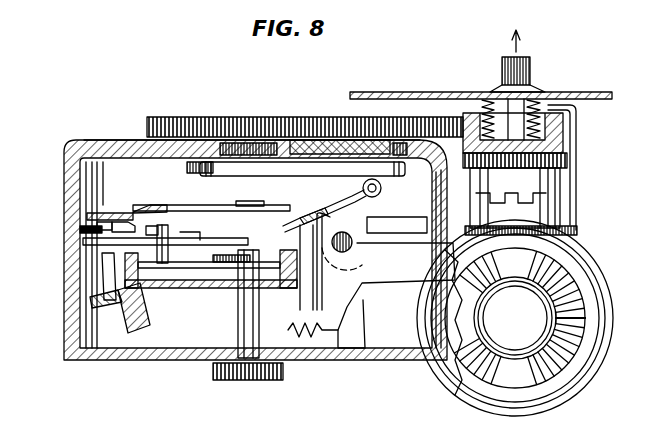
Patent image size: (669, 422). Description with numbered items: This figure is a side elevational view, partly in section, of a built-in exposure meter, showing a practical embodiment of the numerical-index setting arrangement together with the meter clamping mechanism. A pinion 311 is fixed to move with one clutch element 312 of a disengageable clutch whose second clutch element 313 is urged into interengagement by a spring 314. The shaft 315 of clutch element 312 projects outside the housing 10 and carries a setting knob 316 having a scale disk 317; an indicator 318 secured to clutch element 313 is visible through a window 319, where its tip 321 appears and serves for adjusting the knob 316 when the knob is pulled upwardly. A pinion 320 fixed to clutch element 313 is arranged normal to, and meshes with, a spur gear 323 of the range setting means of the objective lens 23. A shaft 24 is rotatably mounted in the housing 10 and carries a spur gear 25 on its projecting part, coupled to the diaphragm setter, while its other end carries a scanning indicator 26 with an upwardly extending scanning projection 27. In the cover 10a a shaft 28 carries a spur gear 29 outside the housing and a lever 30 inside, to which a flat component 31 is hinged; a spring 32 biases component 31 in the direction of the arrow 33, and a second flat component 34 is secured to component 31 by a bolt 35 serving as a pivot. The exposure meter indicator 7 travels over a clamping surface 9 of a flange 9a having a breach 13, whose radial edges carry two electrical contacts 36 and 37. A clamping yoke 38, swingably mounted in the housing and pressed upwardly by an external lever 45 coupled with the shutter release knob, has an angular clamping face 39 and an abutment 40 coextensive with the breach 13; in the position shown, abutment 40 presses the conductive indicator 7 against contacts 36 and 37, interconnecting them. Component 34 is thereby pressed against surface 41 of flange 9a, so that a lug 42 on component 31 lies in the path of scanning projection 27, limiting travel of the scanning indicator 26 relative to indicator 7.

The exposure meter indicator 7 is at (194, 233).
The clamping surface 9 is at (75, 254).
The flange 9a is at (90, 225).
The exposure meter housing 10 is at (70, 332).
The upper part or cover 10a is at (130, 148).
The breach 13 is at (102, 222).
The objective lens 23 is at (545, 315).
The shaft 24 is at (240, 330).
The spur gear 25 is at (214, 370).
The scanning indicator 26 is at (215, 250).
The scanning projection 27 is at (178, 226).
The shaft 28 is at (240, 147).
The spur gear 29 is at (211, 118).
The lever 30 is at (197, 172).
The flat component 31 is at (290, 224).
The spring 32 is at (382, 189).
The arrow 33 is at (294, 203).
The flat component 34 is at (214, 205).
The bolt 35 is at (250, 201).
The electrical contact 36 is at (80, 233).
The electrical contact 37 is at (127, 222).
The clamping yoke 38 is at (148, 330).
The angular clamping face 39 is at (95, 293).
The abutment 40 is at (105, 268).
The surface 41 is at (80, 212).
The lug 42 is at (150, 226).
The external lever 45 is at (386, 280).
The pinion 311 is at (568, 155).
The clutch element 312 is at (542, 185).
The clutch element 313 is at (486, 212).
The spring 314 is at (497, 110).
The shaft 315 is at (556, 119).
The setting knob 316 is at (502, 67).
The scale disk 317 is at (536, 88).
The indicator 318 is at (576, 202).
The window 319 is at (558, 92).
The pinion 320 is at (578, 226).
The tip of indicator 321 is at (512, 38).
The spur gear 323 is at (585, 276).